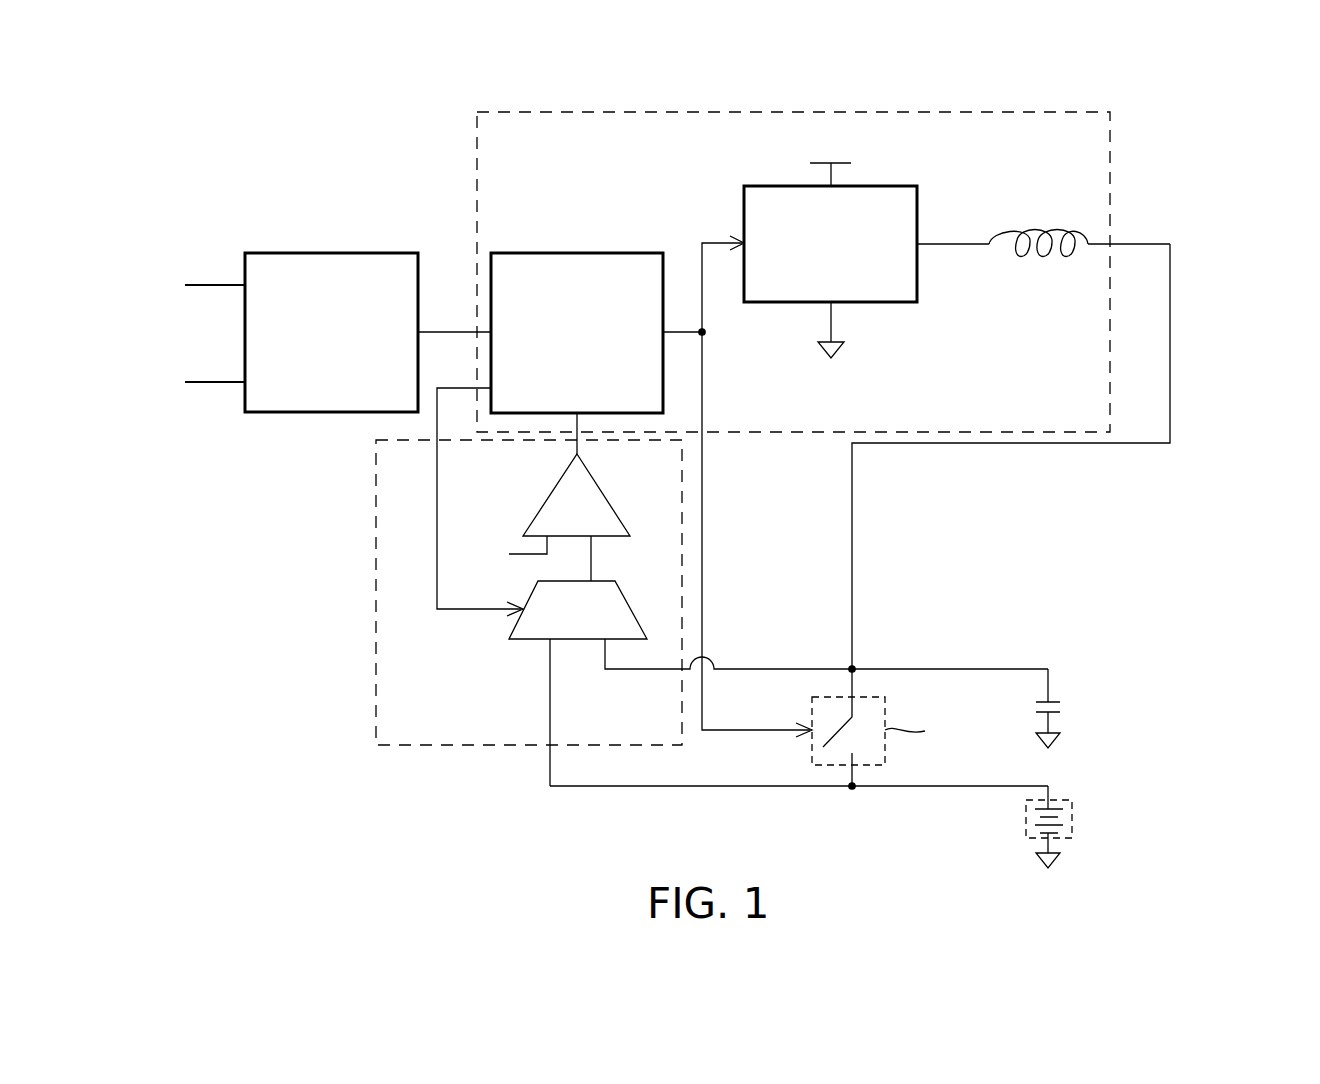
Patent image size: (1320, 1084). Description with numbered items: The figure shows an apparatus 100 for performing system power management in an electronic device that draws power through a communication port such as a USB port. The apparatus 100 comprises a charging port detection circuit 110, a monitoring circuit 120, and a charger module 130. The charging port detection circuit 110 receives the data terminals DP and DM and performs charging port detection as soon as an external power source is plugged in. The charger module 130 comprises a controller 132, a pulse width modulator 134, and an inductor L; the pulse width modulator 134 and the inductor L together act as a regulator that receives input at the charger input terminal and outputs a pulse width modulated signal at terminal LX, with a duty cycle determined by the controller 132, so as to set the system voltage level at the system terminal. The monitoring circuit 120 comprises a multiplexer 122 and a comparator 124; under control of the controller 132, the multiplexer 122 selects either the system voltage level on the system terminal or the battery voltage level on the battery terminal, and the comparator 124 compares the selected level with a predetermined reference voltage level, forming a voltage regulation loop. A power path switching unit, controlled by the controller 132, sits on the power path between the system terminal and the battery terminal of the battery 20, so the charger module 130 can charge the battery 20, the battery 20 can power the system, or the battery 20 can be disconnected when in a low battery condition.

The apparatus 100 is at (1140, 170).
The charging port detection circuit 110 is at (331, 252).
The monitoring circuit 120 is at (376, 592).
The multiplexer 122 is at (604, 582).
The comparator 124 is at (605, 491).
The charger module 130 is at (477, 197).
The controller 132 is at (577, 252).
The pulse width modulator 134 is at (770, 305).
The battery 20 is at (1026, 822).